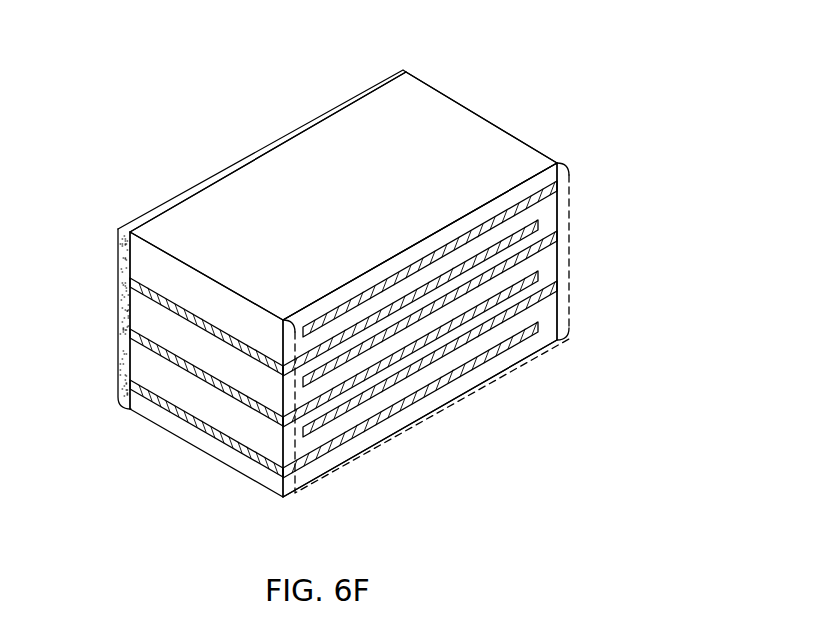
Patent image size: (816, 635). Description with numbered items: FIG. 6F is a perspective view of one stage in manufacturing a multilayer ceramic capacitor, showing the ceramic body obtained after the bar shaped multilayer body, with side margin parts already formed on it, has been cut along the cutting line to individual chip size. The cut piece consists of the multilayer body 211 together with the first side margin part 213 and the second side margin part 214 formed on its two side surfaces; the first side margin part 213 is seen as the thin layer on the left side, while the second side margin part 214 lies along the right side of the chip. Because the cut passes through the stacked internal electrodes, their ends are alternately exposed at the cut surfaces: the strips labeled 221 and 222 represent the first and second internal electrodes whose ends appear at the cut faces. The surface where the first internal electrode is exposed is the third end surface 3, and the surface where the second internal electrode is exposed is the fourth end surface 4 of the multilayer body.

The third end surface 3 is at (155, 442).
The fourth end surface 4 is at (540, 125).
The multilayer body 211 is at (448, 118).
The first side margin part 213 is at (118, 232).
The second side margin part 214 is at (393, 420).
The first internal electrode 221 is at (228, 443).
The second internal electrode 222 is at (552, 292).